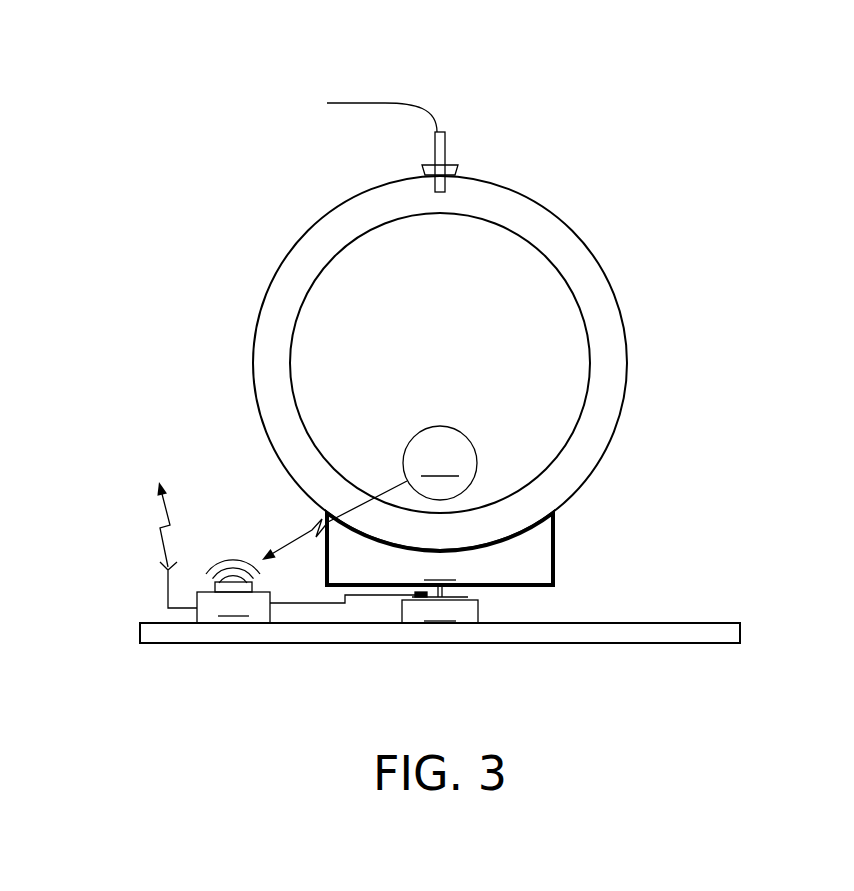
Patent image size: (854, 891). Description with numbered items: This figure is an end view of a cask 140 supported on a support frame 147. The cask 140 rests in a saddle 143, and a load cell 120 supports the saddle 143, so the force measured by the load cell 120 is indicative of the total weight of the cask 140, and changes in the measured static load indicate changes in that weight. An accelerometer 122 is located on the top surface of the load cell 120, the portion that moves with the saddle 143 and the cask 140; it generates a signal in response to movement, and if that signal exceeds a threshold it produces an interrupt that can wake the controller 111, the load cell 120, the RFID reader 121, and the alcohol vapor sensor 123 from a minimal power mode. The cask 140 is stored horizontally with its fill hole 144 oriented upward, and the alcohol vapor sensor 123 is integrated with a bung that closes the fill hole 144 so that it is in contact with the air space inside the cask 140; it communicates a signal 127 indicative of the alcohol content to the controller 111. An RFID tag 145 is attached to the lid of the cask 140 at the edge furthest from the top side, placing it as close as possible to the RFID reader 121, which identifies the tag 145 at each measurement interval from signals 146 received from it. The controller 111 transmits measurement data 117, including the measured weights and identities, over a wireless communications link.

The controller 111 is at (233, 607).
The measurement data 117 is at (158, 528).
The load cell 120 is at (440, 610).
The RFID reader 121 is at (252, 585).
The accelerometer 122 is at (417, 598).
The alcohol vapor sensor 123 is at (435, 150).
The signal 127 is at (343, 97).
The cask 140 is at (622, 312).
The saddle 143 is at (440, 549).
The fill hole 144 is at (453, 165).
The RFID tag 145 is at (440, 463).
The signals 146 is at (298, 538).
The support frame 147 is at (683, 643).